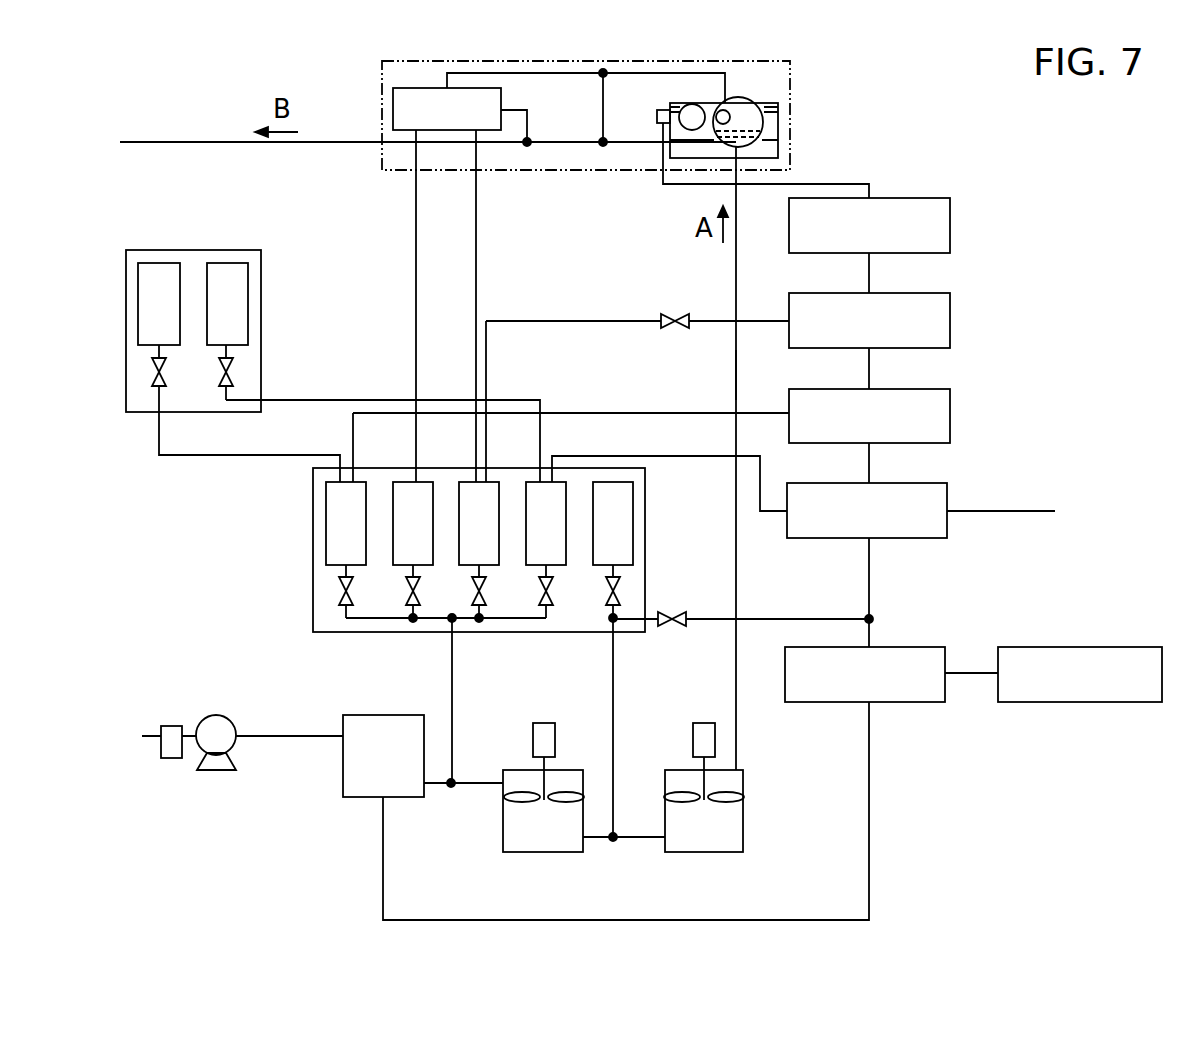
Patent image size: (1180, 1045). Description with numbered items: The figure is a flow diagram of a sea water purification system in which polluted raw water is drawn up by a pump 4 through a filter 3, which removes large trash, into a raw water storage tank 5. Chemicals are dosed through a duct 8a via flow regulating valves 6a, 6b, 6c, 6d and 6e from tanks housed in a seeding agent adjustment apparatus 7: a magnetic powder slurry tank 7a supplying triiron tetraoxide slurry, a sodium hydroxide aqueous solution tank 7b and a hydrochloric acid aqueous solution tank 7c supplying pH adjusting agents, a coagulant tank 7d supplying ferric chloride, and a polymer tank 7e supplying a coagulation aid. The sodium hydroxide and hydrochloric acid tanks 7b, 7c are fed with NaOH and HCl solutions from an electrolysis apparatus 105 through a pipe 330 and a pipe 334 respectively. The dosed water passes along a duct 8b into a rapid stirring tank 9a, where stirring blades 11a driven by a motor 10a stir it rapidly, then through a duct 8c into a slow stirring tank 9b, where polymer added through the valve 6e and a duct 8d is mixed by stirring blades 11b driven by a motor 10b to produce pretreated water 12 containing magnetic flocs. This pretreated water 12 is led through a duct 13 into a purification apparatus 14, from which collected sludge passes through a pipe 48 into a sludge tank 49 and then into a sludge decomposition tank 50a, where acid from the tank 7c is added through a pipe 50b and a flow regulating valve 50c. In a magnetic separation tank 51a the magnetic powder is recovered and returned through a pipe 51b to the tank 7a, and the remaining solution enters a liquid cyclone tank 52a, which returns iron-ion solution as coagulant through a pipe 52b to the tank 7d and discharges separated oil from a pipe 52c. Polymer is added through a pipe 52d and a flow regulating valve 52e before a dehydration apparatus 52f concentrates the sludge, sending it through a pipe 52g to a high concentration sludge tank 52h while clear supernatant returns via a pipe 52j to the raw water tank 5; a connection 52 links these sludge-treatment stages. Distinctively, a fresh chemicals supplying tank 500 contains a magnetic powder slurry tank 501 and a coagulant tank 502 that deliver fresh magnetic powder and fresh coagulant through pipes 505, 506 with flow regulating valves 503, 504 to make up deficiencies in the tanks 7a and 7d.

The filter 3 is at (167, 726).
The pump 4 is at (210, 715).
The raw water storage tank 5 is at (380, 715).
The flow regulating valve 6a is at (338, 593).
The flow regulating valve 6b is at (406, 591).
The flow regulating valve 6c is at (472, 591).
The flow regulating valve 6d is at (539, 591).
The flow regulating valve 6e is at (606, 591).
The seeding agent adjustment apparatus 7 is at (313, 552).
The magnetic powder slurry tank 7a is at (326, 498).
The sodium hydroxide aqueous solution tank 7b is at (408, 479).
The hydrochloric acid aqueous solution tank 7c is at (472, 479).
The coagulant tank 7d is at (542, 479).
The polymer tank 7e is at (647, 506).
The duct 8a is at (478, 790).
The duct 8b is at (455, 663).
The duct 8c is at (632, 845).
The duct 8d is at (615, 663).
The rapid stirring tank 9a is at (540, 855).
The slow stirring tank 9b is at (700, 855).
The motor 10a is at (533, 740).
The motor 10b is at (693, 738).
The stirring blades 11a is at (556, 805).
The stirring blades 11b is at (716, 805).
The pretreated water 12 is at (745, 812).
The duct 13 is at (736, 369).
The purification apparatus 14 is at (790, 90).
The pipe 48 is at (843, 183).
The sludge tank 49 is at (952, 224).
The sludge decomposition tank 50a is at (952, 318).
The pipe 50b is at (577, 320).
The flow regulating valve 50c is at (674, 314).
The magnetic separation tank 51a is at (952, 413).
The pipe 51b is at (614, 413).
The connecting pipe 52 is at (870, 372).
The liquid cyclone tank 52a is at (915, 540).
The pipe 52b is at (762, 468).
The pipe 52c is at (998, 511).
The pipe 52d is at (778, 619).
The flow regulating valve 52e is at (671, 612).
The dehydration apparatus 52f is at (910, 703).
The pipe 52g is at (976, 672).
The high concentration sludge tank 52h is at (1105, 703).
The pipe 52j is at (870, 876).
The electrolysis apparatus 105 is at (504, 101).
The pipe 330 is at (416, 230).
The pipe 334 is at (478, 222).
The fresh chemicals supplying tank 500 is at (188, 250).
The magnetic powder slurry tank 501 is at (138, 305).
The coagulant tank 502 is at (250, 305).
The flow regulating valve 503 is at (152, 372).
The flow regulating valve 504 is at (233, 372).
The pipe 505 is at (159, 442).
The pipe 506 is at (372, 400).